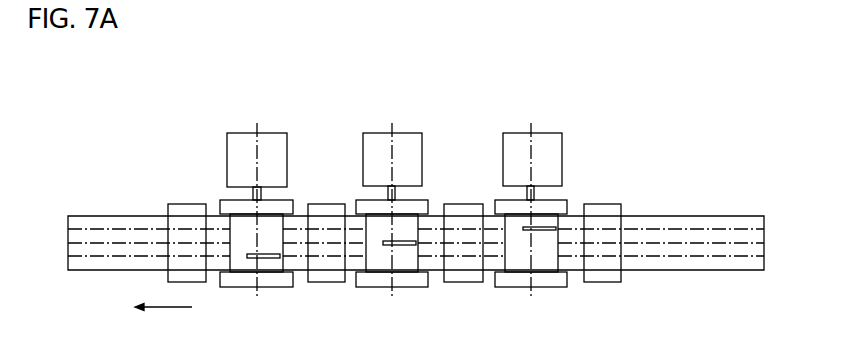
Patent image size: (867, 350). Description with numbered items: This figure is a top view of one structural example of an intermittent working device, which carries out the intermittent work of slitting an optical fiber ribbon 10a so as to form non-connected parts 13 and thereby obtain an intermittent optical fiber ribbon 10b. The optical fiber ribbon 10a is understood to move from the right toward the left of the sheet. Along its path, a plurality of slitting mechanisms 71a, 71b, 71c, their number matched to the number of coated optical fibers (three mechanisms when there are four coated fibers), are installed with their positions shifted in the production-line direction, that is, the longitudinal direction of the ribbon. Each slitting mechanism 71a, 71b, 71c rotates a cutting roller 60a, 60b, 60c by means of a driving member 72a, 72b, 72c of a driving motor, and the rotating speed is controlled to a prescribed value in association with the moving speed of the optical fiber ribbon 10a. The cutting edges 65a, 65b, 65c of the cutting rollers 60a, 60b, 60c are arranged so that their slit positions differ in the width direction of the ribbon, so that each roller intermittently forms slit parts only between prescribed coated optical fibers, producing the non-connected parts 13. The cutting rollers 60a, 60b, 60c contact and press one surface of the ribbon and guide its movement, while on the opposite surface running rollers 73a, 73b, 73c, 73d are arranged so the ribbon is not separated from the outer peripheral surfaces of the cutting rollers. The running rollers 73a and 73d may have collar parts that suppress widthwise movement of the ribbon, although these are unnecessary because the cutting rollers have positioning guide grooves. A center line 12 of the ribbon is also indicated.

The optical fiber ribbon 10a is at (657, 270).
The intermittent optical fiber ribbon 10b is at (107, 215).
The center line of strip 12 is at (147, 238).
The non-connected part 13 is at (102, 250).
The cutting roller 60a is at (512, 282).
The cutting roller 60b is at (378, 282).
The cutting roller 60c is at (233, 282).
The cutting edge 65a is at (538, 230).
The cutting edge 65b is at (397, 245).
The cutting edge 65c is at (270, 258).
The slitting mechanism 71a is at (517, 123).
The slitting mechanism 71b is at (377, 122).
The slitting mechanism 71c is at (232, 122).
The driving member 72a is at (547, 138).
The driving member 72b is at (413, 138).
The driving member 72c is at (270, 138).
The running roller 73a is at (608, 203).
The running roller 73b is at (465, 203).
The running roller 73c is at (333, 203).
The running roller 73d is at (187, 203).